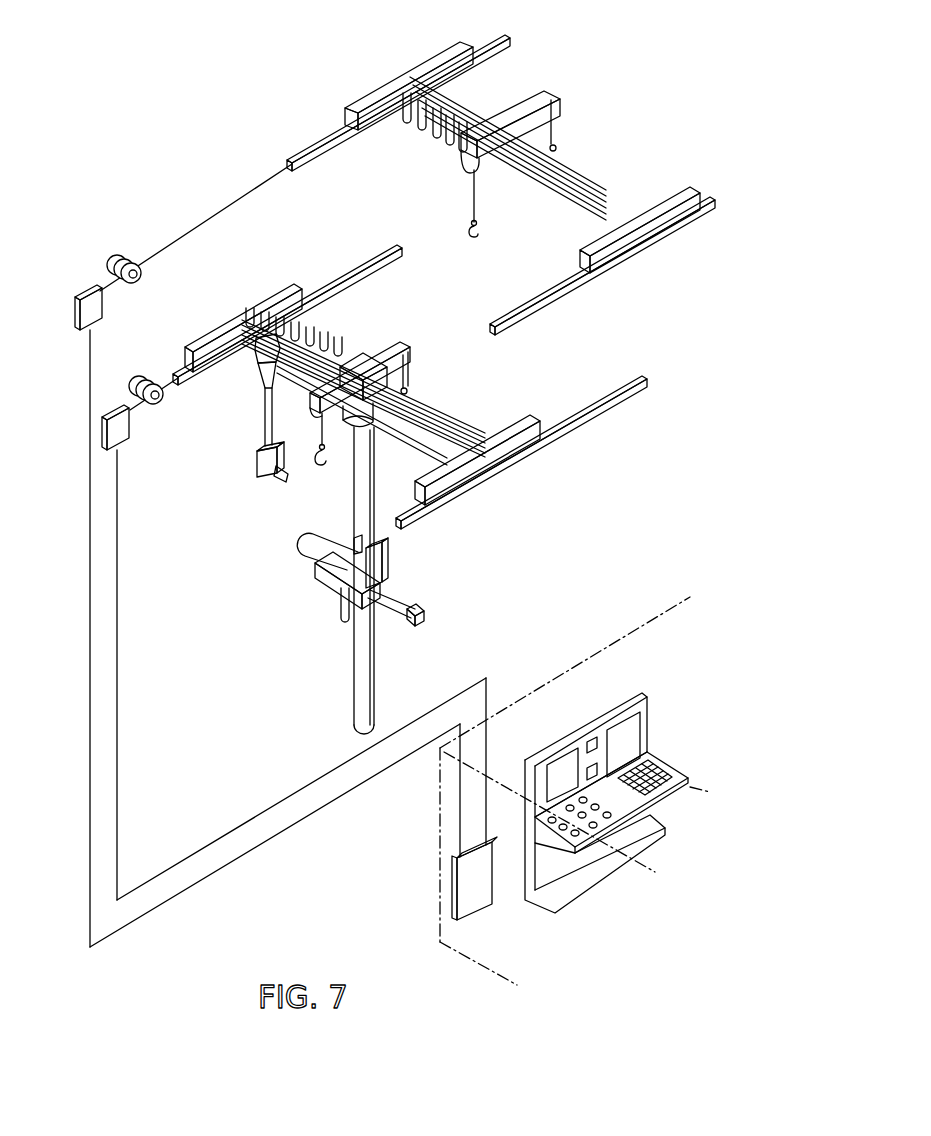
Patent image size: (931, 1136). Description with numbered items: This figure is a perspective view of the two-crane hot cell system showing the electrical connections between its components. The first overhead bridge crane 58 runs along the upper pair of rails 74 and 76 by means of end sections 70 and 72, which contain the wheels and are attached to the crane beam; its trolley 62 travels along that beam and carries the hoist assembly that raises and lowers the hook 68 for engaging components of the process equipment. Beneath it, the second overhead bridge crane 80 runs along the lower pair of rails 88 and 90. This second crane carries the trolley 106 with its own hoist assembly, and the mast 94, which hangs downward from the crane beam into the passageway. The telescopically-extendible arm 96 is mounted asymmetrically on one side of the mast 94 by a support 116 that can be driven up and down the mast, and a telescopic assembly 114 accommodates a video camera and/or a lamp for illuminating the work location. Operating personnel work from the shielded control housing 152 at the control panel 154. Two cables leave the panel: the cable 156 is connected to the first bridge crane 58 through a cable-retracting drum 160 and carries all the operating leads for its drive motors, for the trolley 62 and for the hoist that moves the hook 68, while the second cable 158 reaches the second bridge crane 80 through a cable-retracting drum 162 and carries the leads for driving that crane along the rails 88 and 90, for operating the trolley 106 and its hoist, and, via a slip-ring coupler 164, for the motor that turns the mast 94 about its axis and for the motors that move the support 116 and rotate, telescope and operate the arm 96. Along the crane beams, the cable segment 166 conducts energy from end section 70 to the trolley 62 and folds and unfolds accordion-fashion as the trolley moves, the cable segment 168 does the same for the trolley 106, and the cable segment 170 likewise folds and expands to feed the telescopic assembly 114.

The first overhead bridge crane 58 is at (595, 173).
The trolley 62 is at (503, 156).
The hook 68 is at (468, 231).
The end section 70 is at (378, 96).
The end section 72 is at (612, 245).
The rail 74 is at (327, 152).
The rail 76 is at (535, 308).
The second overhead bridge crane 80 is at (454, 426).
The rail 88 is at (365, 262).
The rail 90 is at (604, 398).
The mast 94 is at (376, 698).
The telescopically-extendible arm 96 is at (335, 577).
The trolley 106 is at (386, 382).
The telescopic assembly 114 is at (268, 430).
The support 116 is at (378, 567).
The shielded control housing 152 is at (440, 833).
The control panel 154 is at (582, 740).
The cable 156 is at (278, 832).
The second cable 158 is at (294, 795).
The cable-retracting drum 160 is at (141, 266).
The cable-retracting drum 162 is at (160, 405).
The slip-ring coupler 164 is at (377, 428).
The cable segment 166 is at (428, 128).
The cable segment 168 is at (338, 340).
The cable segment 170 is at (252, 352).